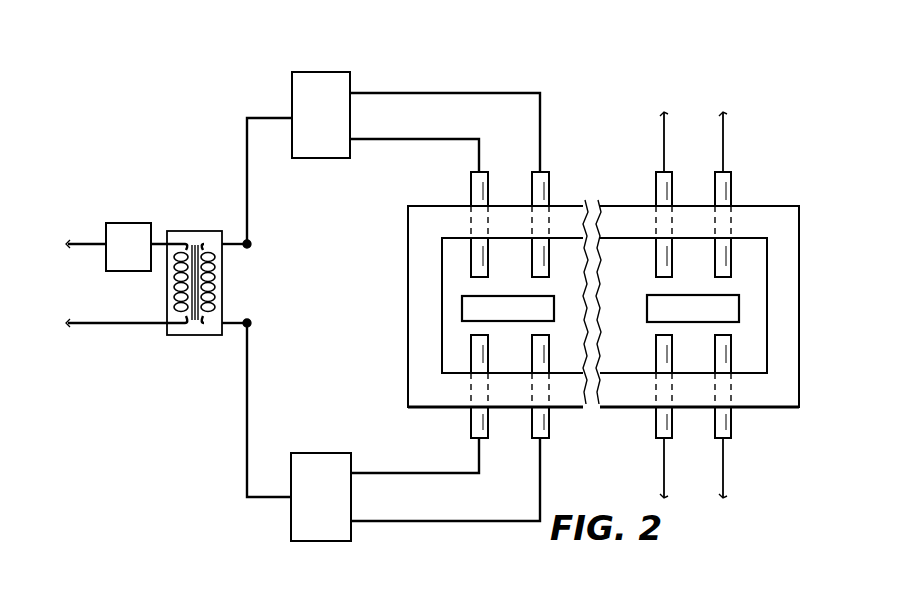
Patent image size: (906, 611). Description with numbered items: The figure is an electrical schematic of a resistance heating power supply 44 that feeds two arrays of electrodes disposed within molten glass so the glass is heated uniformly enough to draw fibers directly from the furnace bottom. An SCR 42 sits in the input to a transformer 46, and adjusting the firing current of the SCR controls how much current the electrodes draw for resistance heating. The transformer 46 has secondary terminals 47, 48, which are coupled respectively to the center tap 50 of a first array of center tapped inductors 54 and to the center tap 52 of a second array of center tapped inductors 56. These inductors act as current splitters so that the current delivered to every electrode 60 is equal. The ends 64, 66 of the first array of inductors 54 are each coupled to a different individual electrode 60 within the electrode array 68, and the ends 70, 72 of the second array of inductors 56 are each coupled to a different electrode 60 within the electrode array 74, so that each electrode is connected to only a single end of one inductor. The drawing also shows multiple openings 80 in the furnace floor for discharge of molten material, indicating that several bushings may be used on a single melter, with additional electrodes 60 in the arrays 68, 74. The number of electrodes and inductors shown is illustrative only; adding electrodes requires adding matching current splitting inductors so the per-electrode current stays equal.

The SCR 42 is at (121, 223).
The resistance heating power supply 44 is at (220, 265).
The transformer 46 is at (214, 282).
The secondary terminal 47 is at (247, 244).
The secondary terminal 48 is at (247, 323).
The center tap 50 is at (263, 118).
The center tap 52 is at (273, 497).
The first array of center tapped inductors 54 is at (286, 70).
The second array of center tapped inductors 56 is at (336, 453).
The electrode 60 is at (750, 437).
The end of inductor 64 is at (430, 93).
The end of inductor 66 is at (417, 139).
The electrode array 68 is at (498, 277).
The end of inductor 70 is at (422, 473).
The end of inductor 72 is at (422, 521).
The electrode array 74 is at (695, 340).
The opening 80 is at (548, 310).